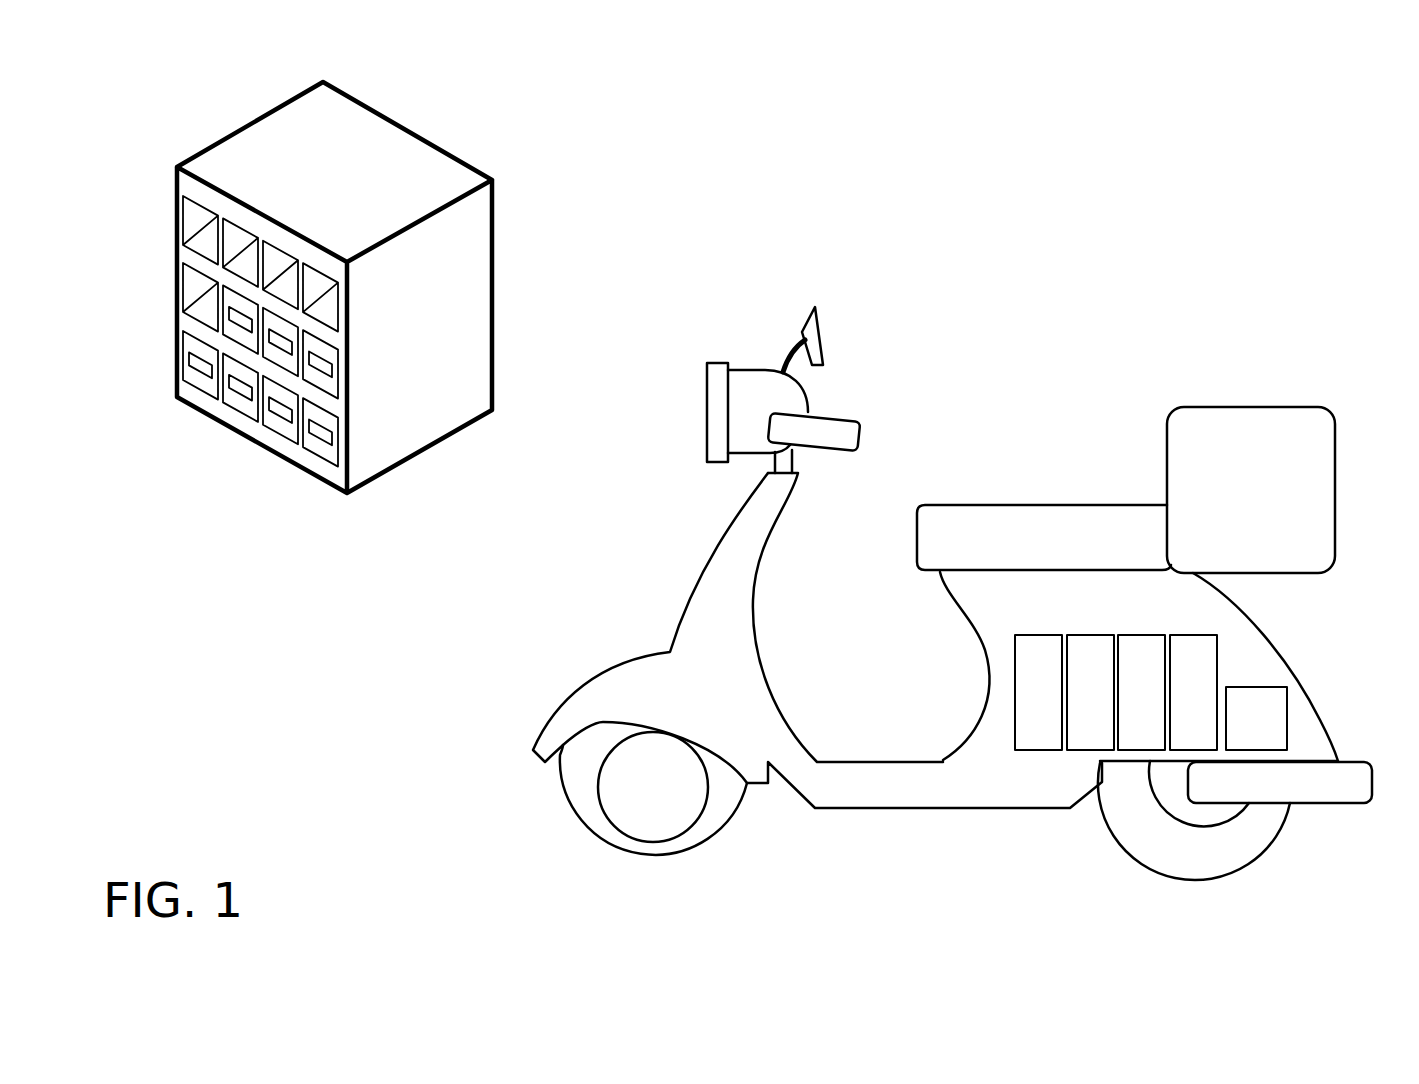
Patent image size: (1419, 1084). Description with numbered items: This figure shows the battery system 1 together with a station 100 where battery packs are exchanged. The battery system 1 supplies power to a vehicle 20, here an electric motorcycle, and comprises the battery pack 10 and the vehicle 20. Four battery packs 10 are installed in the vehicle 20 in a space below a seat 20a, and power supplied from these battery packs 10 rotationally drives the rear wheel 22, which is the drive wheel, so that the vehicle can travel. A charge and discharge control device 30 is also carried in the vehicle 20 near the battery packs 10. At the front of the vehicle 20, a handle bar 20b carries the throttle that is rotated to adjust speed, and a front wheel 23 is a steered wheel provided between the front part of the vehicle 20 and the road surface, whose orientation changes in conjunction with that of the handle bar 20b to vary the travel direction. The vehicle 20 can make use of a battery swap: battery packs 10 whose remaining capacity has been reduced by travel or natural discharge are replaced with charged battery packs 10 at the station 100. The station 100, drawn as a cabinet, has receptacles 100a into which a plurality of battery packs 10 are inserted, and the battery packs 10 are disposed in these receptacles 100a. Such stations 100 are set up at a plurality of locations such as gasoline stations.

The battery system 1 is at (952, 606).
The battery pack 10 is at (322, 438).
The vehicle 20 is at (685, 328).
The seat 20a is at (980, 522).
The handle bar 20b is at (828, 415).
The rear wheel 22 is at (1215, 868).
The front wheel 23 is at (667, 865).
The charge and discharge control device 30 is at (1248, 720).
The station 100 is at (272, 110).
The receptacle 100a is at (195, 227).